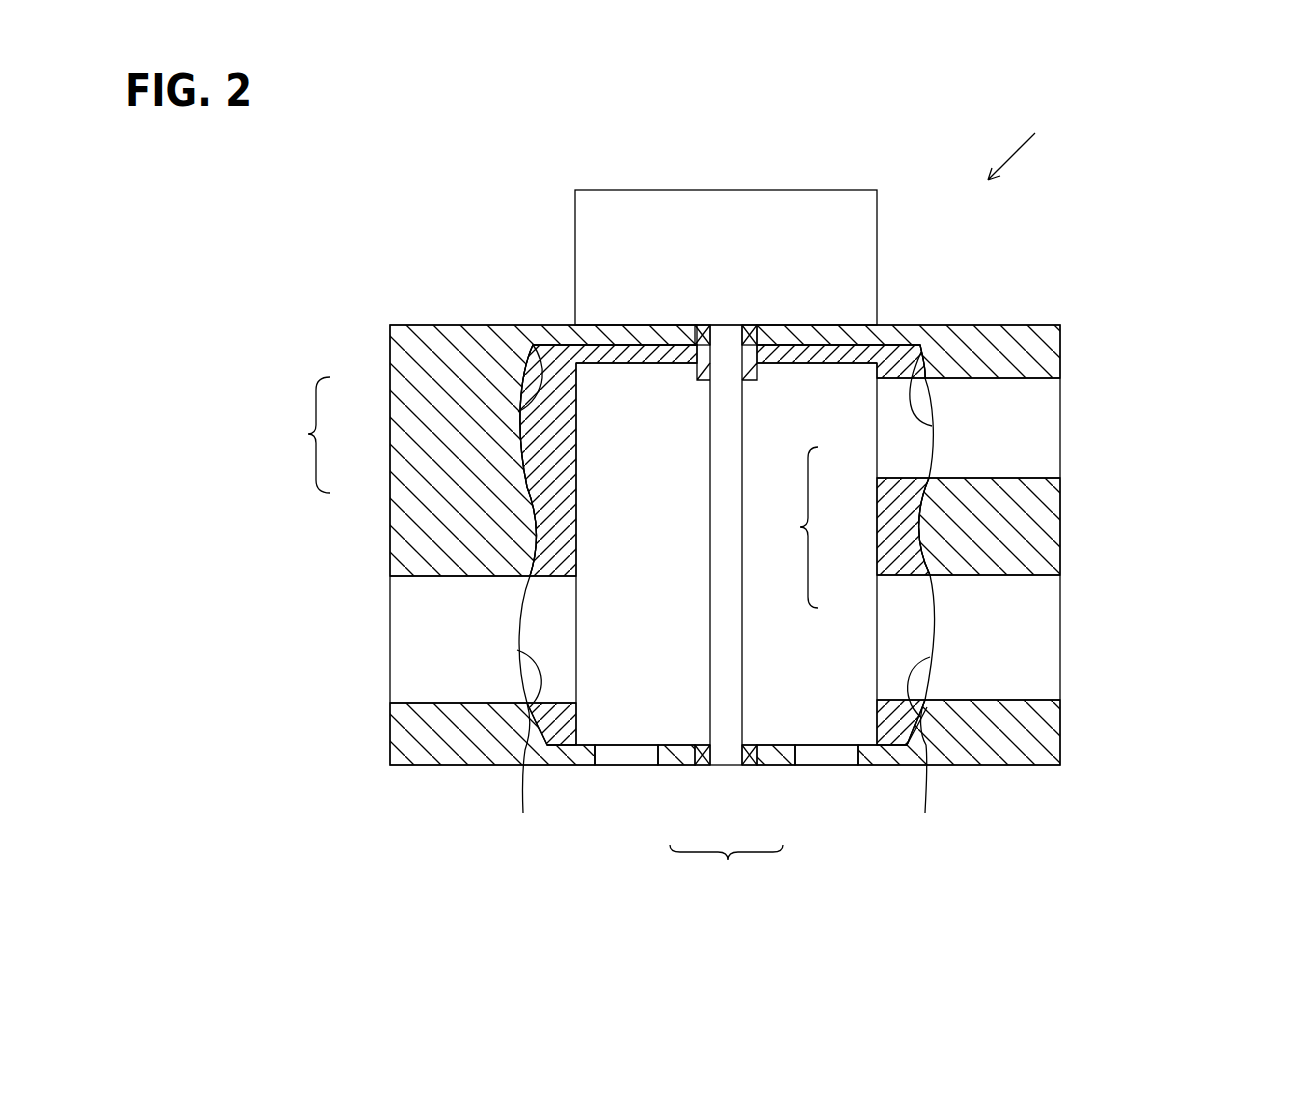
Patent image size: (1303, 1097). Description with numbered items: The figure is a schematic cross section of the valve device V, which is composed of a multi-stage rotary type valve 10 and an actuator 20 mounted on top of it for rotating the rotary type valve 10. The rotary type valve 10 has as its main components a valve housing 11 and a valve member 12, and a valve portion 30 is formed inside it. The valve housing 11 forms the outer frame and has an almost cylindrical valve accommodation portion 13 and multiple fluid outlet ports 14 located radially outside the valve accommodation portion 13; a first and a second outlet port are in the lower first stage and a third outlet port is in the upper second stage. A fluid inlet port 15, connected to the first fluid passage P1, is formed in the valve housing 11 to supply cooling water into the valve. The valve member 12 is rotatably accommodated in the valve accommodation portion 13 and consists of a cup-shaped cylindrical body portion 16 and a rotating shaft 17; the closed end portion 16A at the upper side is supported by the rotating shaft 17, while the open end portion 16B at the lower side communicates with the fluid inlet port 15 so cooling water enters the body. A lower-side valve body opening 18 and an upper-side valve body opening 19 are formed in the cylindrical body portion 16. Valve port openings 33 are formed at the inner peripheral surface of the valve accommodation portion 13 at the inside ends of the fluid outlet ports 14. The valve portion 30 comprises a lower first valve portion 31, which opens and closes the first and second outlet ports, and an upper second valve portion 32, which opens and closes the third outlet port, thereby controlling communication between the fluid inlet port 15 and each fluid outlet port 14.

The rotary type valve 10 is at (1030, 328).
The valve housing 11 is at (448, 372).
The valve member 12 is at (306, 435).
The valve accommodation portion 13 is at (532, 342).
The fluid outlet ports 14 is at (437, 632).
The fluid inlet port 15 is at (643, 768).
The cylindrical body portion 16 is at (540, 440).
The closed end portion 16A is at (619, 338).
The open end portion 16B is at (613, 762).
The rotating shaft 17 is at (722, 495).
The lower-side valve body opening 18 is at (913, 630).
The upper-side valve body opening 19 is at (912, 447).
The actuator 20 is at (802, 212).
The valve portion 30 is at (797, 527).
The first valve portion 31 is at (876, 600).
The second valve portion 32 is at (877, 452).
The valve port openings 33 is at (921, 355).
The first fluid passage P1 is at (726, 865).
The valve device V is at (1020, 150).